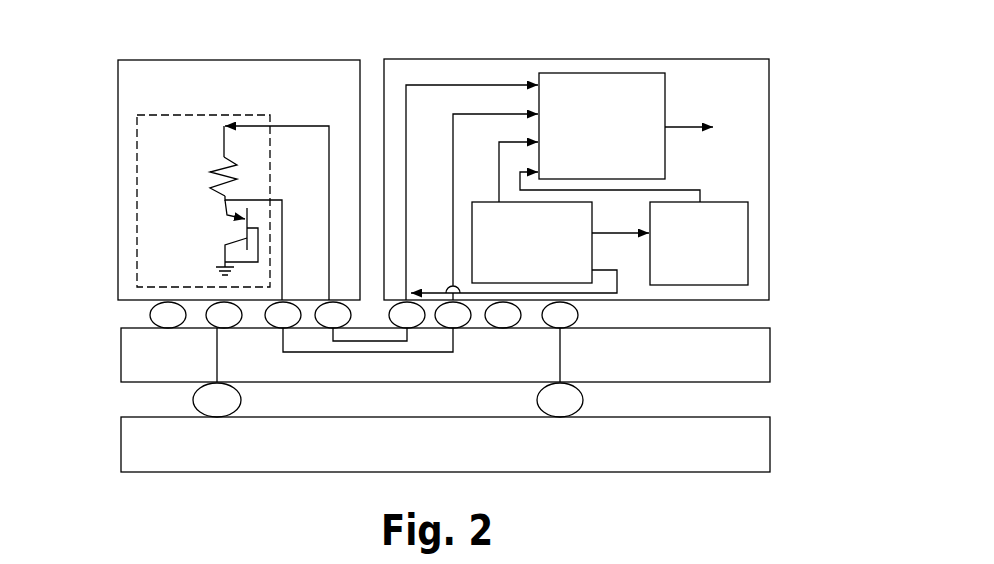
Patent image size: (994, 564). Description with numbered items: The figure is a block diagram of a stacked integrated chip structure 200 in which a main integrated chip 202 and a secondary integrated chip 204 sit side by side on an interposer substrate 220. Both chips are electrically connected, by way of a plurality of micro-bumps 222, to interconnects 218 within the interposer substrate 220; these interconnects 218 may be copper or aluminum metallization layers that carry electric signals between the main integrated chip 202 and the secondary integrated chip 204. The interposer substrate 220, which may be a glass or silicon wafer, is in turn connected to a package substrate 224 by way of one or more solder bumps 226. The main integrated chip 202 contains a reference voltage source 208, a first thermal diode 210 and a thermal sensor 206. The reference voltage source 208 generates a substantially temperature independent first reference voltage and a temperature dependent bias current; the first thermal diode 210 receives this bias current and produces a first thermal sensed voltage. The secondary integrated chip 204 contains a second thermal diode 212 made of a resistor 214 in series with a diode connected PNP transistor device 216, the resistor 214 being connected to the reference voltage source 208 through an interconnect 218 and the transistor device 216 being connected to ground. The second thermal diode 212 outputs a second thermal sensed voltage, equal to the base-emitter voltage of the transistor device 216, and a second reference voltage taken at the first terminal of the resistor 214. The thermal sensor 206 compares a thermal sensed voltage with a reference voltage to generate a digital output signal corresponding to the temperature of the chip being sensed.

The stacked integrated chip structure 200 is at (104, 35).
The main integrated chip 202 is at (756, 59).
The secondary integrated chip 204 is at (317, 60).
The thermal sensor 206 is at (587, 163).
The reference voltage source 208 is at (517, 267).
The first thermal diode 210 is at (684, 278).
The second thermal diode 212 is at (247, 116).
The resistor 214 is at (205, 162).
The diode connected PNP transistor device 216 is at (205, 234).
The interconnects 218 is at (464, 357).
The interposer substrate 220 is at (771, 356).
The micro-bumps 222 is at (150, 318).
The package substrate 224 is at (771, 434).
The solder bumps 226 is at (584, 402).